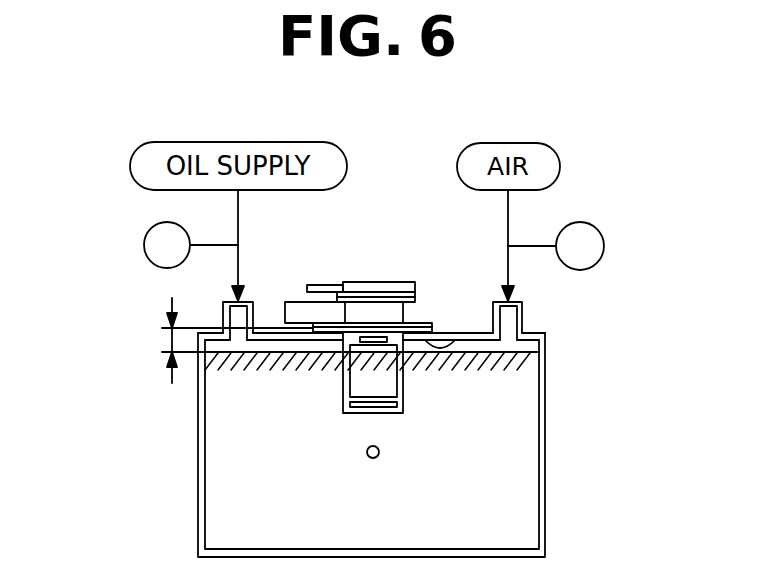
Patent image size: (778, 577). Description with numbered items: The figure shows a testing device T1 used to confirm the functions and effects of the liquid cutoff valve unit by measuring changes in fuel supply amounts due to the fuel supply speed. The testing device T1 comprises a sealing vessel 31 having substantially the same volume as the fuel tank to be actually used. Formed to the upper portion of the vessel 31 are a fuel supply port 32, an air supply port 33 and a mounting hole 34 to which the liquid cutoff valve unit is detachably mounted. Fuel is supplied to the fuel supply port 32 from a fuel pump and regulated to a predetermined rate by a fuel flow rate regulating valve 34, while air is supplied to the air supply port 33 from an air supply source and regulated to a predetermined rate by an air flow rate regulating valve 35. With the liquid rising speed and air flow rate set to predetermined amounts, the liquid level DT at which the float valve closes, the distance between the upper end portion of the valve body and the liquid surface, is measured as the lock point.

The sealing vessel 31 is at (545, 448).
The fuel supply port 32 is at (222, 308).
The air supply port 33 is at (523, 310).
The fuel flow rate regulating valve 34 is at (145, 236).
The air flow rate regulating valve 35 is at (603, 237).
The testing device T1 is at (386, 199).
The liquid level DT is at (170, 340).